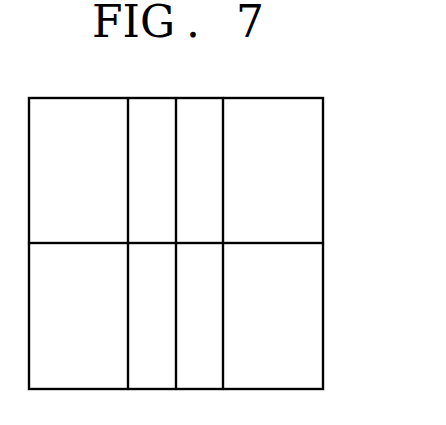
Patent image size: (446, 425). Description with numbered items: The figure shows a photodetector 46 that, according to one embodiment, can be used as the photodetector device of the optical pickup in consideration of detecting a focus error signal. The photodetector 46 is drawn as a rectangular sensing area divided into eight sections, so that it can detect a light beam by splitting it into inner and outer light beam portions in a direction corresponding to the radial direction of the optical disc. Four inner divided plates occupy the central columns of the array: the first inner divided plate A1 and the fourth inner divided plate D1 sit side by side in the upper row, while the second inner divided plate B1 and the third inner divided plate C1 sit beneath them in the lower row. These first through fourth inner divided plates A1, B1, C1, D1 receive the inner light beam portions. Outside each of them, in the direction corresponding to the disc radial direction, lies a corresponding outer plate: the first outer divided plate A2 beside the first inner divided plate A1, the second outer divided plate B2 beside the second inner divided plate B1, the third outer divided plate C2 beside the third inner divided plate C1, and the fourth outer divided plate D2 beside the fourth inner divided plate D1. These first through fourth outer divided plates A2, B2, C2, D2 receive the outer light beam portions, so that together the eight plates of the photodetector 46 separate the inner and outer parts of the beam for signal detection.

The photodetector 46 is at (323, 184).
The first inner divided plate A1 is at (152, 170).
The first outer divided plate A2 is at (78, 170).
The second inner divided plate B1 is at (152, 316).
The second outer divided plate B2 is at (78, 316).
The third inner divided plate C1 is at (199, 316).
The third outer divided plate C2 is at (273, 316).
The fourth inner divided plate D1 is at (199, 170).
The fourth outer divided plate D2 is at (273, 170).